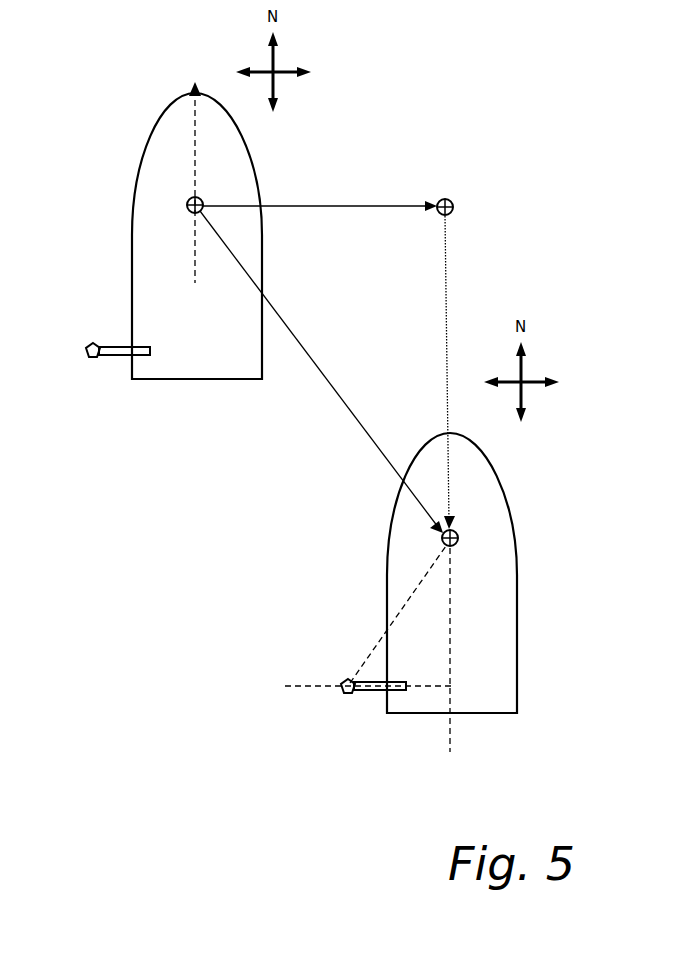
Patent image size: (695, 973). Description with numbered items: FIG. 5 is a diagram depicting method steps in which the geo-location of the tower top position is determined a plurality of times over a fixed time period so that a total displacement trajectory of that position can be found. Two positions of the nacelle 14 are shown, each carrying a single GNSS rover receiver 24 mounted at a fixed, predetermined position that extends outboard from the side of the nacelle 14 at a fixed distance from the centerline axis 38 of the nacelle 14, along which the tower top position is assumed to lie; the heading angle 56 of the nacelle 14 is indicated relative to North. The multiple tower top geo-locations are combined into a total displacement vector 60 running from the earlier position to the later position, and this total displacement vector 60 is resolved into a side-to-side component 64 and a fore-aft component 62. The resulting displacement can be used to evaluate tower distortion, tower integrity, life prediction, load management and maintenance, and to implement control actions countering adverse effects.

The nacelle 14 is at (132, 197).
The rover receiver 24 is at (86, 352).
The centerline axis 38 is at (196, 143).
The heading angle 56 is at (185, 55).
The total displacement vector 60 is at (370, 442).
The fore-aft component 62 is at (447, 311).
The side-to-side component 64 is at (366, 207).